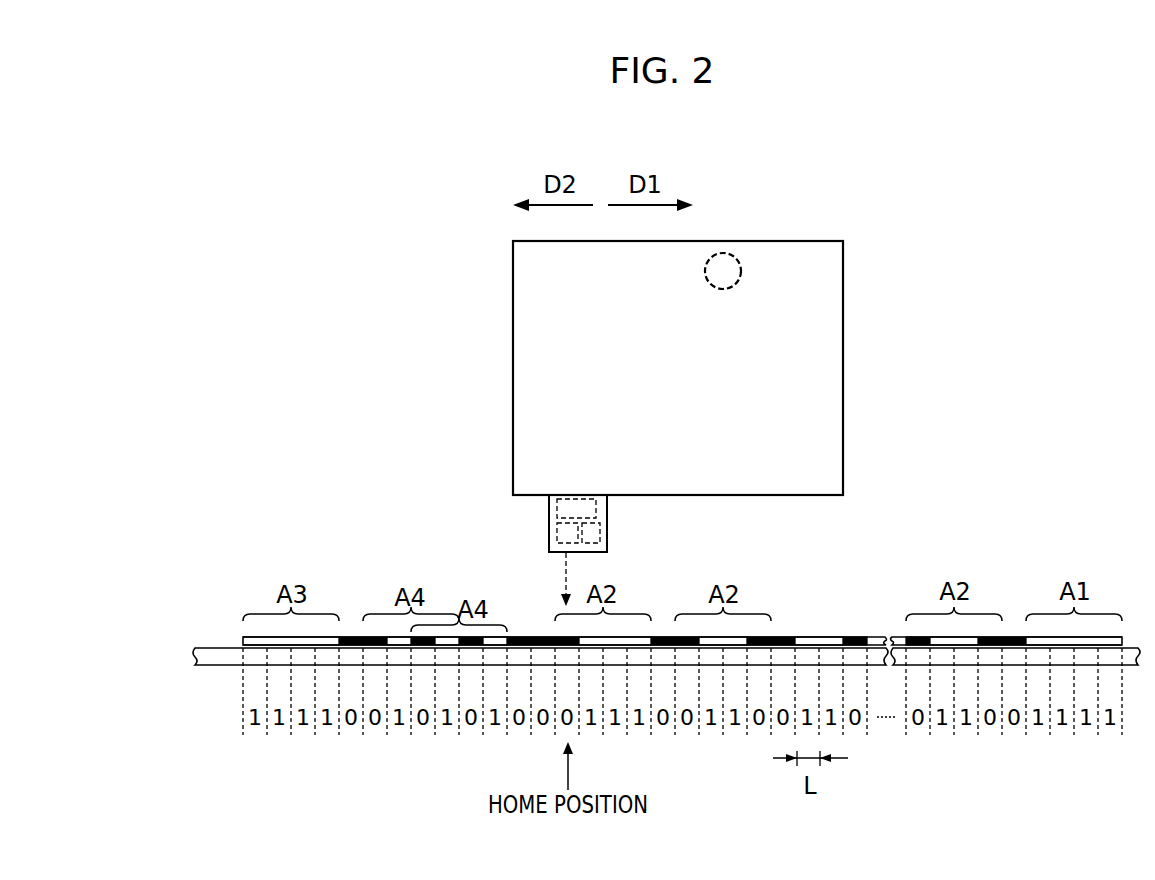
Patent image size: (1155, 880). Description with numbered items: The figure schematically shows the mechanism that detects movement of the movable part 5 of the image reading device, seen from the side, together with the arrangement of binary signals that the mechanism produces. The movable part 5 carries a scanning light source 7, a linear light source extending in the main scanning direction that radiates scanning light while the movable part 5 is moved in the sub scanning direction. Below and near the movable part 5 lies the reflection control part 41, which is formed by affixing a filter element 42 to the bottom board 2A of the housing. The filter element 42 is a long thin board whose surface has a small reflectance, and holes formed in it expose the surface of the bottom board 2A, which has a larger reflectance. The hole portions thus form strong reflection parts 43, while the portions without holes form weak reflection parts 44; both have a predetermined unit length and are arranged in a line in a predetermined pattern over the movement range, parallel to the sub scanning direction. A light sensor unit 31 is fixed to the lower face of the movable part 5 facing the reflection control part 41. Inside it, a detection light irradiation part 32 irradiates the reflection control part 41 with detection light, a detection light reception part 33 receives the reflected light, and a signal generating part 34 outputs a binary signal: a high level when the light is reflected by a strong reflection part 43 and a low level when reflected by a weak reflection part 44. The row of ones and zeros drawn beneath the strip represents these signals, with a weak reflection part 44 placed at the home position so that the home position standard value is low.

The bottom board 2A is at (217, 652).
The movable part 5 is at (843, 330).
The scanning light source 7 is at (727, 253).
The light sensor unit 31 is at (560, 535).
The detection light irradiation part 32 is at (548, 542).
The detection light reception part 33 is at (603, 538).
The signal generating part 34 is at (603, 510).
The reflection control part 41 is at (655, 577).
The filter element 42 is at (242, 639).
The strong reflection part 43 is at (828, 637).
The weak reflection part 44 is at (351, 636).